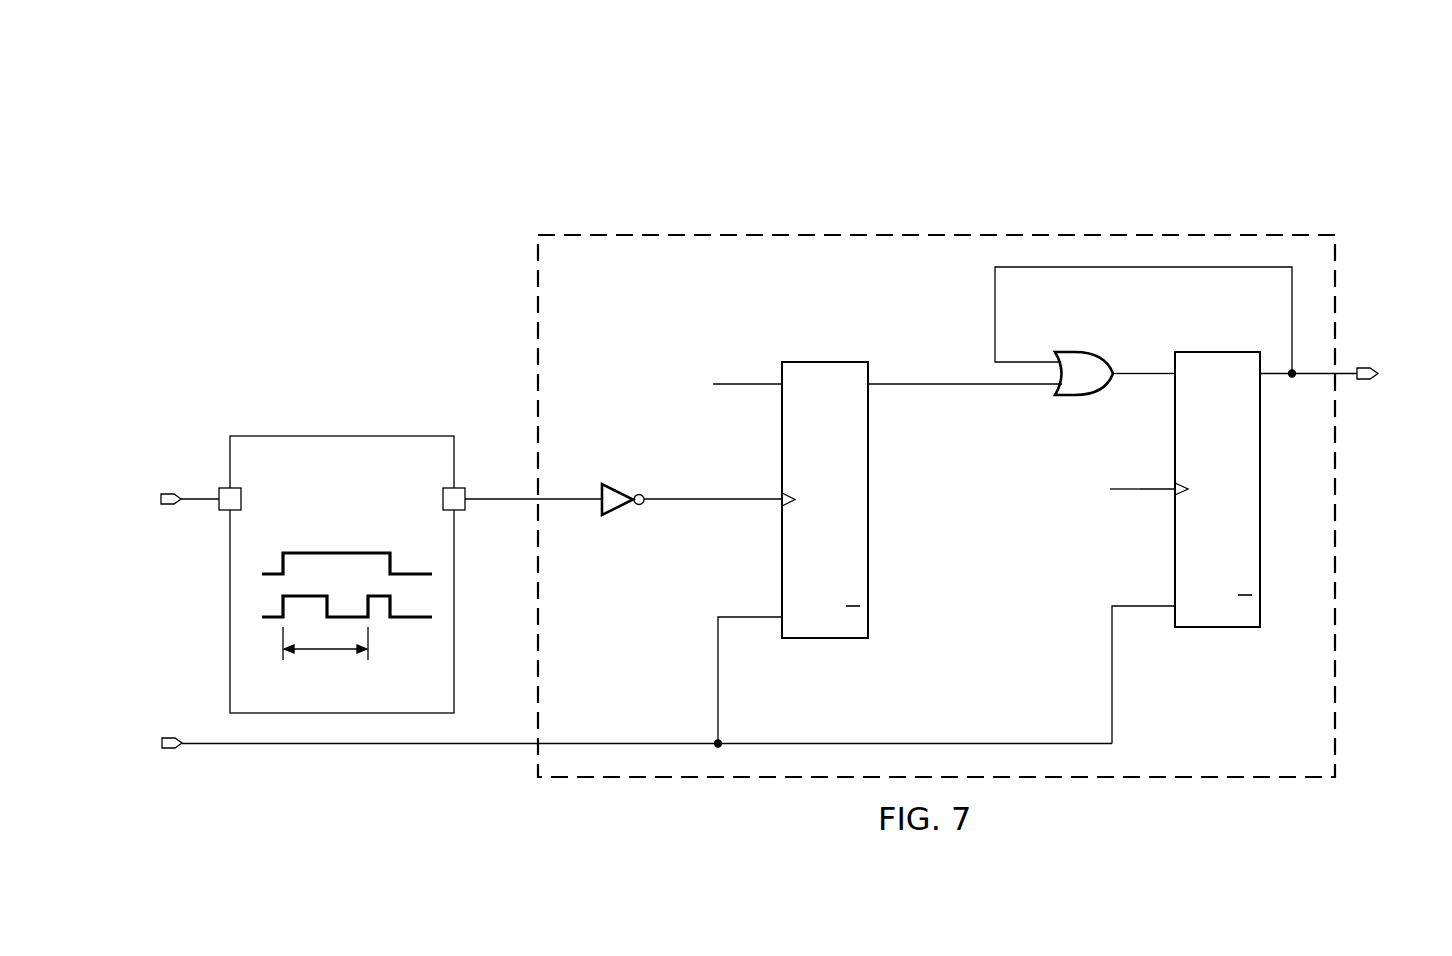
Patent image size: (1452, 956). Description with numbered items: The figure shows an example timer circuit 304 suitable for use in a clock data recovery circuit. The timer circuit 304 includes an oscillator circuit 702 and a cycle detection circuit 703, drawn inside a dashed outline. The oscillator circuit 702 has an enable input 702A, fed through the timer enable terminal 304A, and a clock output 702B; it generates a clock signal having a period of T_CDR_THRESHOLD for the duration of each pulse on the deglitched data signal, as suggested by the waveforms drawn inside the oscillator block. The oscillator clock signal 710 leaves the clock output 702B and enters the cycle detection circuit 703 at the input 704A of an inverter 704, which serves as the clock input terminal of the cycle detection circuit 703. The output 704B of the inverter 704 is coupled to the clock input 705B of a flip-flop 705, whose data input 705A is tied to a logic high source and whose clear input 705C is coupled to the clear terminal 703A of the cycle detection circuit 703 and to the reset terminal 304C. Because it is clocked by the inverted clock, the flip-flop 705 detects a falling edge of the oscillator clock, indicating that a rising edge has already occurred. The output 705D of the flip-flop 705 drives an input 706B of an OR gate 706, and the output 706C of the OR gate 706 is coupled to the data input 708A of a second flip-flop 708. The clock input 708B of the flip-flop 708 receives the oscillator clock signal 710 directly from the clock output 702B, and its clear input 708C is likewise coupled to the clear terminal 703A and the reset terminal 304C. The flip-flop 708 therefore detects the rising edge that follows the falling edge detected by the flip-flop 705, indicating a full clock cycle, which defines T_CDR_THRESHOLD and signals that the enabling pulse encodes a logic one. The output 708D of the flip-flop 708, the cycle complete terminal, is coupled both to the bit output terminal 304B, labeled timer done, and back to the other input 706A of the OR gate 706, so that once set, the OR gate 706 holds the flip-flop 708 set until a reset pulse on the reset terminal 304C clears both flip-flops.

The timer circuit 304 is at (410, 231).
The enable terminal of the timer circuit 304A is at (167, 495).
The bit output terminal 304B is at (1375, 342).
The reset terminal 304C is at (167, 752).
The oscillator circuit 702 is at (335, 433).
The enable input 702A is at (210, 505).
The clock output 702B is at (475, 503).
The cycle detection circuit 703 is at (1052, 232).
The clear terminal 703A is at (528, 748).
The inverter 704 is at (621, 483).
The input of the inverter 704A is at (592, 502).
The output of the inverter 704B is at (653, 503).
The flip-flop 705 is at (828, 358).
The data input of the flip-flop 705A is at (778, 383).
The clock input of the flip-flop 705B is at (772, 502).
The clear input of the flip-flop 705C is at (772, 620).
The output of the flip-flop 705D is at (878, 386).
The OR gate 706 is at (1083, 346).
The input of the OR gate 706A is at (1048, 360).
The input of the OR gate 706B is at (1045, 385).
The output of the OR gate 706C is at (1122, 377).
The flip-flop 708 is at (1219, 346).
The data input of the flip-flop 708A is at (1165, 368).
The clock input of the flip-flop 708B is at (1165, 487).
The clear input of the flip-flop 708C is at (1165, 610).
The output of the flip-flop 708D is at (1272, 377).
The oscillator signal OSC 710 is at (500, 497).